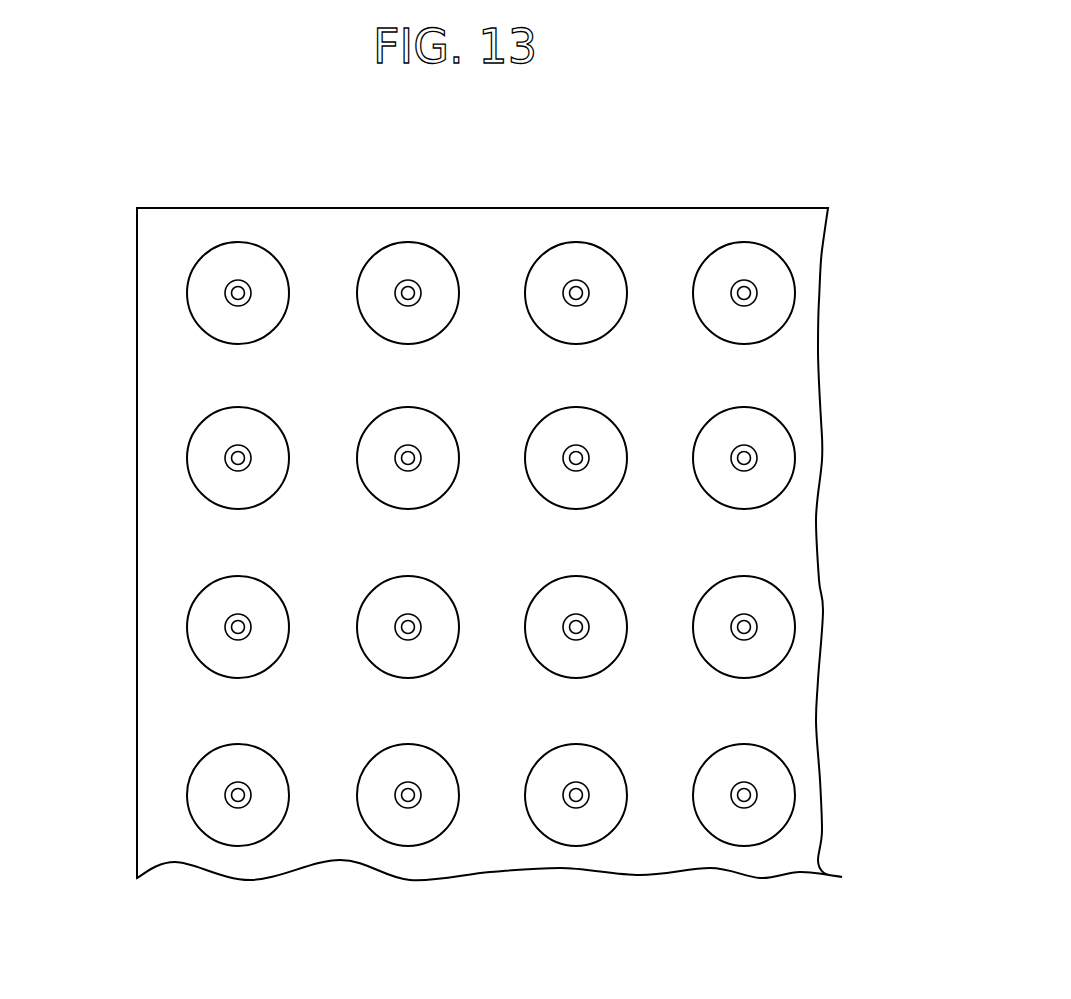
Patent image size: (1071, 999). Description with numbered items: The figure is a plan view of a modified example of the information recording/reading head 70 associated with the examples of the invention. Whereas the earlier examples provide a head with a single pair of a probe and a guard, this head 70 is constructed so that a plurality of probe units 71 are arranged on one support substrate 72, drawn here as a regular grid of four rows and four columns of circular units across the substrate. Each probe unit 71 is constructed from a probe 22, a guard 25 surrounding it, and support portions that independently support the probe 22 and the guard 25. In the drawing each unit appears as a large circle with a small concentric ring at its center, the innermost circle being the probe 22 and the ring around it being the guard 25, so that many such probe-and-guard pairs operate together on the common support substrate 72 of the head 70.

The information recording/reading head 70 is at (828, 184).
The probe unit 71 is at (370, 257).
The support substrate 72 is at (167, 534).
The guard 25 is at (397, 255).
The probe 22 is at (408, 288).